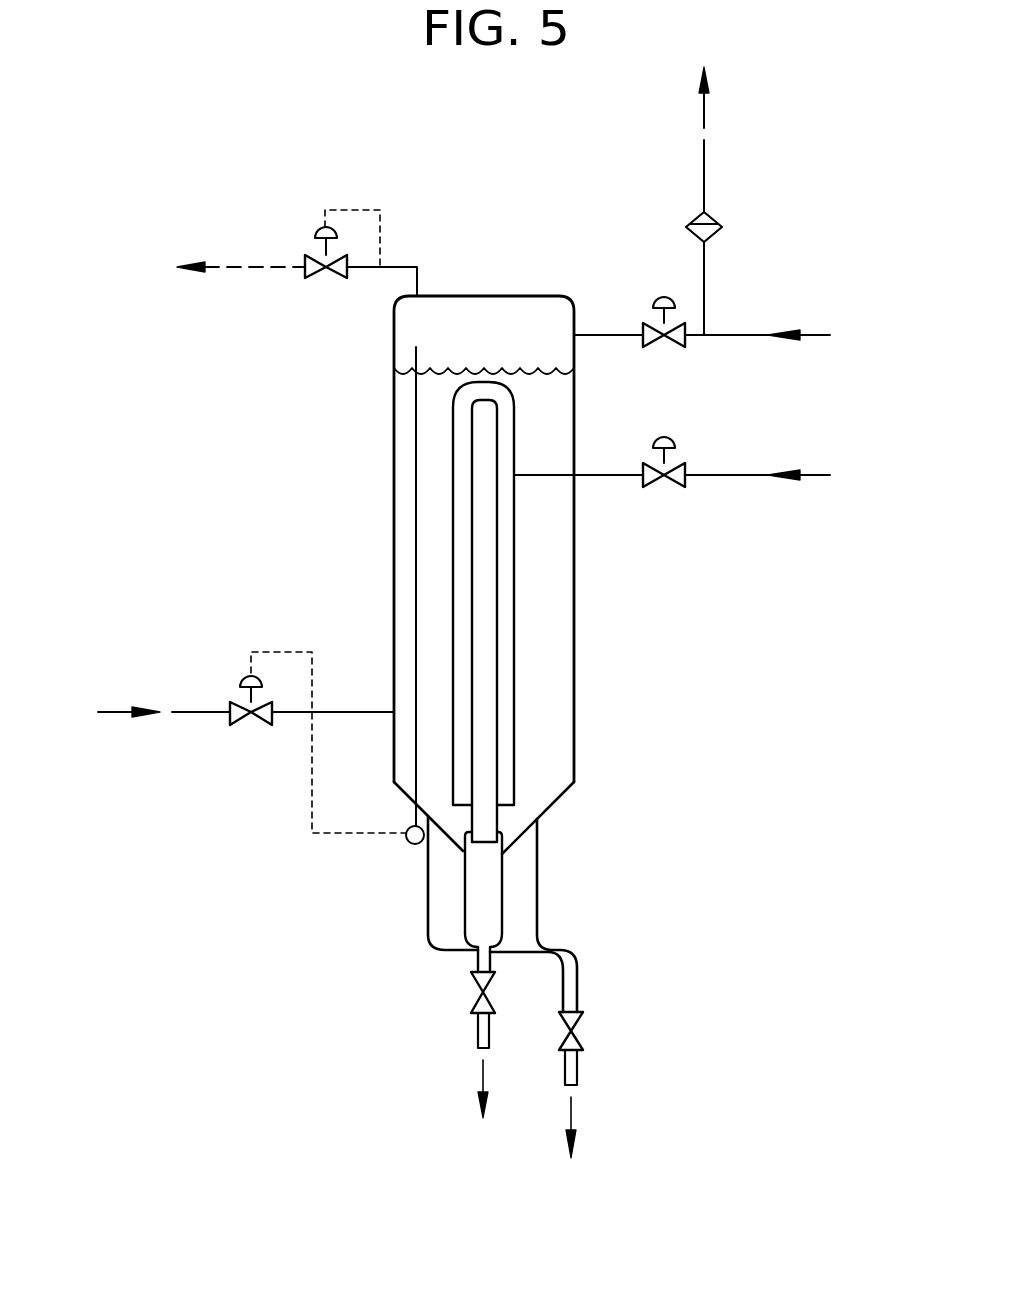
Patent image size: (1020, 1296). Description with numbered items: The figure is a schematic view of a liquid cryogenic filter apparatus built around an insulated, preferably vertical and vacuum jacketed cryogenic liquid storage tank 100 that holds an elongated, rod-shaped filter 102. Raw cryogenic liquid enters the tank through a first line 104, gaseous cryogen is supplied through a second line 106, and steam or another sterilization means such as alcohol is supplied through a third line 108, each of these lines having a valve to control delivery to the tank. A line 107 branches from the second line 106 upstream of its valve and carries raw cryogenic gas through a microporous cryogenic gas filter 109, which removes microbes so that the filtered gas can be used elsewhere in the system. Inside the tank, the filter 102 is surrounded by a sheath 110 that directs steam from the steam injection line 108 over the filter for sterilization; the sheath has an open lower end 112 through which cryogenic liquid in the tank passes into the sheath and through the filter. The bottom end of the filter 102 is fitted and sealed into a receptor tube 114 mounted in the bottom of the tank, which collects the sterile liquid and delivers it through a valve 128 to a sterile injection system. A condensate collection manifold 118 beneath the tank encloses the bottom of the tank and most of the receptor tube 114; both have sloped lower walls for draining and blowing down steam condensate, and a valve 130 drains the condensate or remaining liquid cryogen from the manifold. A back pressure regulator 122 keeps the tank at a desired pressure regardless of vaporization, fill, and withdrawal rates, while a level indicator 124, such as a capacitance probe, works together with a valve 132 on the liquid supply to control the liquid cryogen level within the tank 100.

The cryogenic liquid storage tank 100 is at (575, 622).
The filter 102 is at (492, 700).
The first line 104 is at (350, 712).
The second line 106 is at (733, 333).
The line 107 is at (703, 268).
The third line 108 is at (720, 472).
The microporous cryogenic gas filter 109 is at (708, 217).
The sheath 110 is at (518, 578).
The open lower end 112 is at (505, 808).
The receptor tube 114 is at (503, 877).
The condensate collection manifold 118 is at (537, 913).
The back pressure regulator 122 is at (315, 228).
The level indicator 124 is at (409, 843).
The valve 128 is at (470, 1004).
The valve 130 is at (583, 1040).
The valve 132 is at (243, 673).